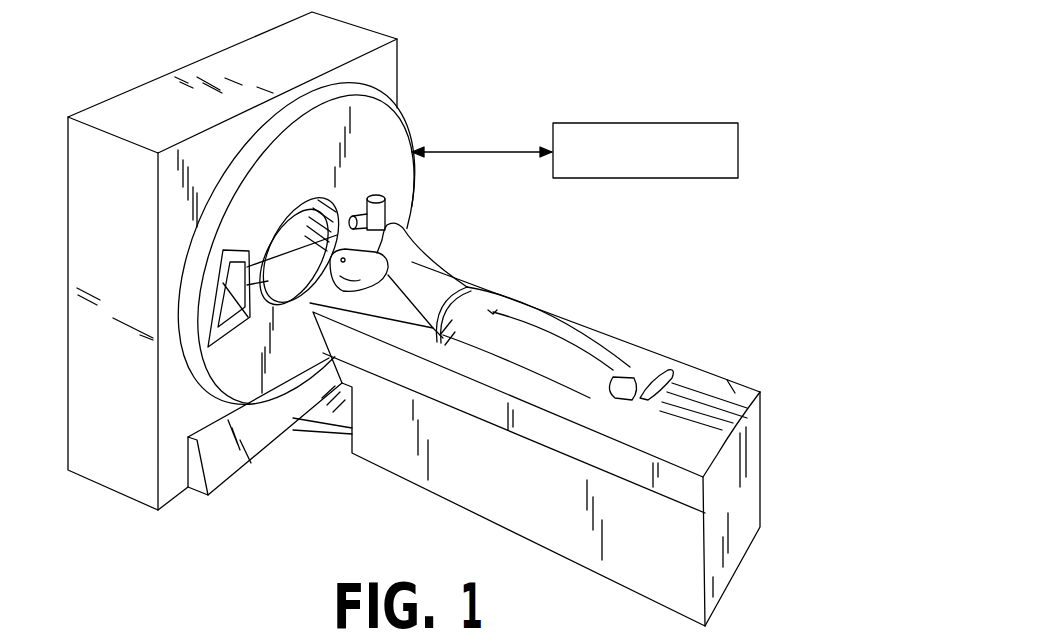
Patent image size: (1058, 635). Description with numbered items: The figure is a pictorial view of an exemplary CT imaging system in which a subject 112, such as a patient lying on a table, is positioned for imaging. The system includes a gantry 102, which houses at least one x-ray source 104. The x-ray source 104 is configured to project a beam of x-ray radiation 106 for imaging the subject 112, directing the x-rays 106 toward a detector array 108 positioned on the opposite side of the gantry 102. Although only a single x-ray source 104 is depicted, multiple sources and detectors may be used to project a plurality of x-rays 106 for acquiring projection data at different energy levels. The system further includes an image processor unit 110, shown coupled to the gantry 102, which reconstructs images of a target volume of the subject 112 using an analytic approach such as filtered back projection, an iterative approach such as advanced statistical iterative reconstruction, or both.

The gantry 102 is at (391, 158).
The x-ray source 104 is at (382, 215).
The beam of x-ray radiation 106 is at (277, 267).
The detector array 108 is at (232, 325).
The image processor unit 110 is at (698, 123).
The subject 112 is at (425, 277).